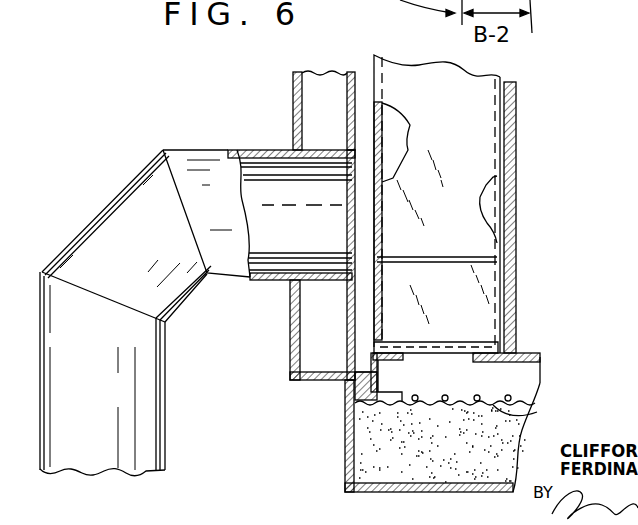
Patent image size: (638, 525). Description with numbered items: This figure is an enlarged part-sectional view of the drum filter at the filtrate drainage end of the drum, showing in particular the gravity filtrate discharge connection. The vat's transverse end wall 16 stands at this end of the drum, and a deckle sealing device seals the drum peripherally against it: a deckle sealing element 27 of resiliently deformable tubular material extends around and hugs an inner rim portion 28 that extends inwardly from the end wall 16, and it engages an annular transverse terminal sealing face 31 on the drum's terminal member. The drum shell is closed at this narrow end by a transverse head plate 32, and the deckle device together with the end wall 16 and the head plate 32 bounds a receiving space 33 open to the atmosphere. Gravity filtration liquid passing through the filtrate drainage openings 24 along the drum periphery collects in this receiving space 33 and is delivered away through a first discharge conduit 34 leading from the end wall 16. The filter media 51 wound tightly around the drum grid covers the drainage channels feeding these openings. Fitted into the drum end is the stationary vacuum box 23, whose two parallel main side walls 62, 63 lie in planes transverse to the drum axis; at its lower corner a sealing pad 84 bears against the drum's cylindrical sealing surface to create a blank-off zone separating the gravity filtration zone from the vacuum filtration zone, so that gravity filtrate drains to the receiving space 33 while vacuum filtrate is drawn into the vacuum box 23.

The end wall 16 is at (350, 447).
The vacuum box 23 is at (463, 130).
The filtrate drainage openings 24 is at (427, 355).
The deckle sealing element 27 is at (360, 398).
The inner rim portion 28 is at (367, 372).
The annular transverse terminal sealing face 31 is at (370, 357).
The head plate 32 is at (513, 195).
The receiving space 33 is at (363, 125).
The first discharge conduit 34 is at (258, 150).
The filter media 51 is at (513, 418).
The main side wall 62 is at (383, 133).
The main side wall 63 is at (480, 197).
The sealing pad 84 is at (458, 345).